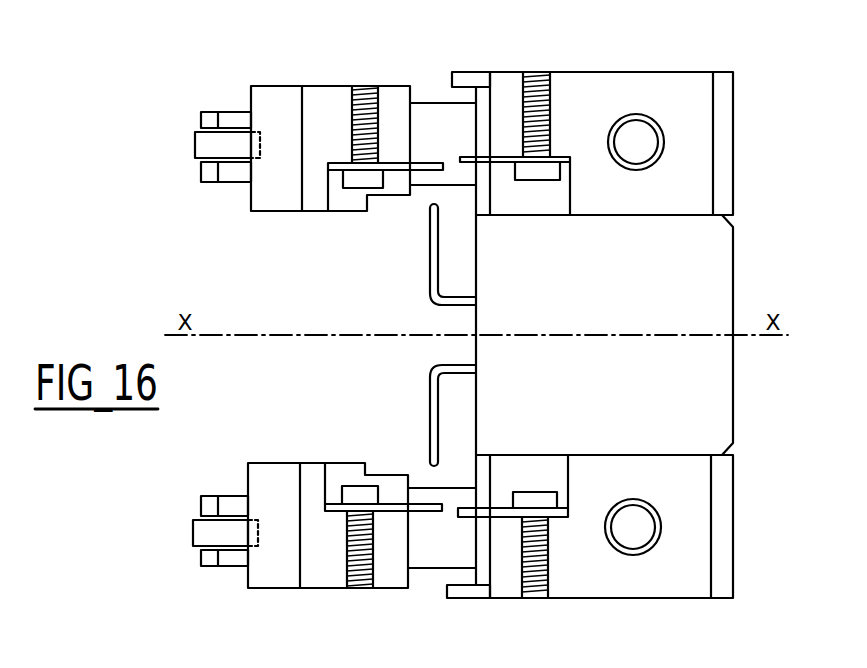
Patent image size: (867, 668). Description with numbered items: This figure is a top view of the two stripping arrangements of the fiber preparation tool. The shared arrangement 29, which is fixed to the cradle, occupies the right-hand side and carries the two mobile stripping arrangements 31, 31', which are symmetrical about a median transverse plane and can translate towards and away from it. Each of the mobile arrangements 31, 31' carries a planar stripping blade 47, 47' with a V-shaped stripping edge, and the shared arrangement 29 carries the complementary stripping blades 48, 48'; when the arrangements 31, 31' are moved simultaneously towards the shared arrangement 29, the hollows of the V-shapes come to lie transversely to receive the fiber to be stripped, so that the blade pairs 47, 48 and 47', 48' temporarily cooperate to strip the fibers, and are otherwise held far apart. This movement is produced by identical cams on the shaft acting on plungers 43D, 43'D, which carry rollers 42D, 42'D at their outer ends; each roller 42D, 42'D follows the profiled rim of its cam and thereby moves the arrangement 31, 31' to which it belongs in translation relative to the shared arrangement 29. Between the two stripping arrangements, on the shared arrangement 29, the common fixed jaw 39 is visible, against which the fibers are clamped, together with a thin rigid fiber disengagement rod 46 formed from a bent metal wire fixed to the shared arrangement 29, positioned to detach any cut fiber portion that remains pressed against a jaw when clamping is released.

The shared arrangement 29 is at (710, 267).
The mobile stripping arrangement 31 is at (330, 116).
The mobile stripping arrangement 31' is at (328, 491).
The fixed jaw 39 is at (430, 388).
The roller 42D is at (195, 145).
The roller 42'D is at (178, 547).
The plunger 43D is at (228, 112).
The plunger 43'D is at (226, 497).
The fiber disengagement rod 46 is at (430, 247).
The stripping blade 47 is at (385, 100).
The stripping blade 47' is at (383, 567).
The stripping blade 48 is at (515, 85).
The stripping blade 48' is at (513, 574).